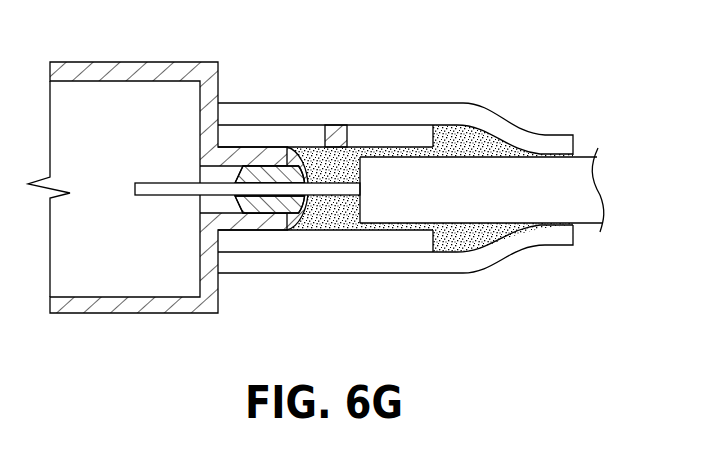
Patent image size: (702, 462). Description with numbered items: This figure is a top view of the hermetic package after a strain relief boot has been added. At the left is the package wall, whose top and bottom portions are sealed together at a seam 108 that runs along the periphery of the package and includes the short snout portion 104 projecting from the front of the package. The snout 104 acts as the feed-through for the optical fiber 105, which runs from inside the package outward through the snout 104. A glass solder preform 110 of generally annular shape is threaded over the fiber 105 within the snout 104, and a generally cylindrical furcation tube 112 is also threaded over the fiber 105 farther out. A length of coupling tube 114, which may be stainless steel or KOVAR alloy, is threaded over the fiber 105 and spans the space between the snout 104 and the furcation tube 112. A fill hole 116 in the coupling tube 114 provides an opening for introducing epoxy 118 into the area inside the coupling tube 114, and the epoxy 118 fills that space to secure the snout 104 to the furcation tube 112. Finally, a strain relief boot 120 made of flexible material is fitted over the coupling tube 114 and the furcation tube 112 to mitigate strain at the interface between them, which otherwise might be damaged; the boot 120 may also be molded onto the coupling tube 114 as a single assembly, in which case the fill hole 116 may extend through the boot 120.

The snout portion 104 is at (231, 224).
The optical fiber 105 is at (134, 190).
The seam 108 is at (165, 62).
The glass solder preform 110 is at (233, 198).
The furcation tube 112 is at (582, 153).
The coupling tube 114 is at (240, 135).
The fill hole 116 is at (333, 135).
The epoxy 118 is at (338, 231).
The strain relief boot 120 is at (445, 115).